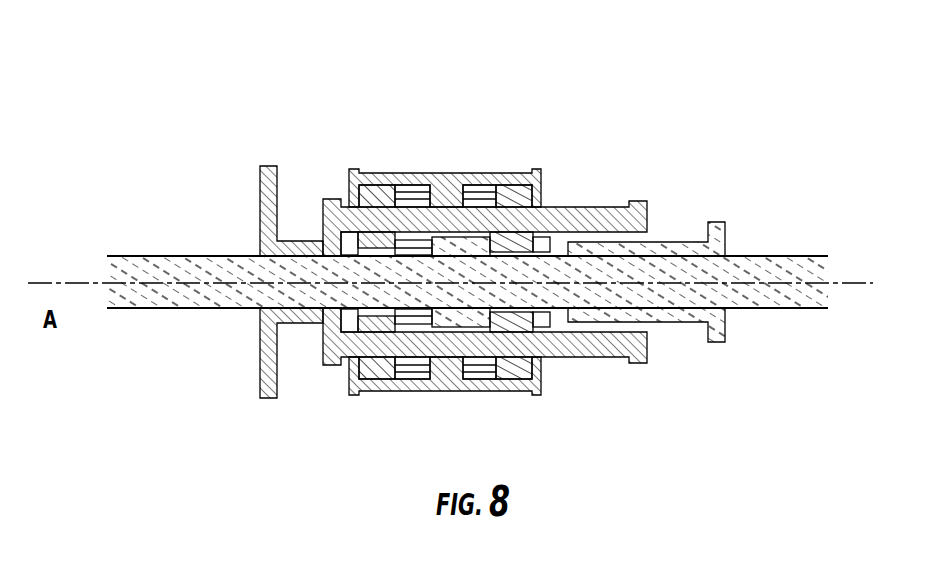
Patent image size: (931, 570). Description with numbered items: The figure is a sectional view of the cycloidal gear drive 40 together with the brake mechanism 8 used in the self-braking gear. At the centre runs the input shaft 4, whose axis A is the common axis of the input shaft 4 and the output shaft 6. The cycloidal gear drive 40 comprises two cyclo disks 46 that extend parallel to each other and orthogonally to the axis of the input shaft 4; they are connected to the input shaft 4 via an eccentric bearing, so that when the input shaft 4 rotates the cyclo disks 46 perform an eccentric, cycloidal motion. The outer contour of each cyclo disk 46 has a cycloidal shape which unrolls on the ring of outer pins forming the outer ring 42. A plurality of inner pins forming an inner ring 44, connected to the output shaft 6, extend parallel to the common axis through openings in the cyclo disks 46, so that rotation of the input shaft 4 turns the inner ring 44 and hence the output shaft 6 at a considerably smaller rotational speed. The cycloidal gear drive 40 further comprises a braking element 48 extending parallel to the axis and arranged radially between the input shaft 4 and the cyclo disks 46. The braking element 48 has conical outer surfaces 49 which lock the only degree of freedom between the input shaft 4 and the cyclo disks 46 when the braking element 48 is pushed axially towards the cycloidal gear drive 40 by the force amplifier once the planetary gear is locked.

The input shaft 4 is at (178, 304).
The output shaft 6 is at (259, 183).
The brake mechanism 8 is at (667, 220).
The cycloidal gear drive 40 is at (712, 83).
The outer ring 42 is at (446, 181).
The inner ring 44 is at (603, 222).
The cyclo disks 46 is at (385, 200).
The braking element 48 is at (683, 323).
The conical outer surfaces 49 is at (444, 331).